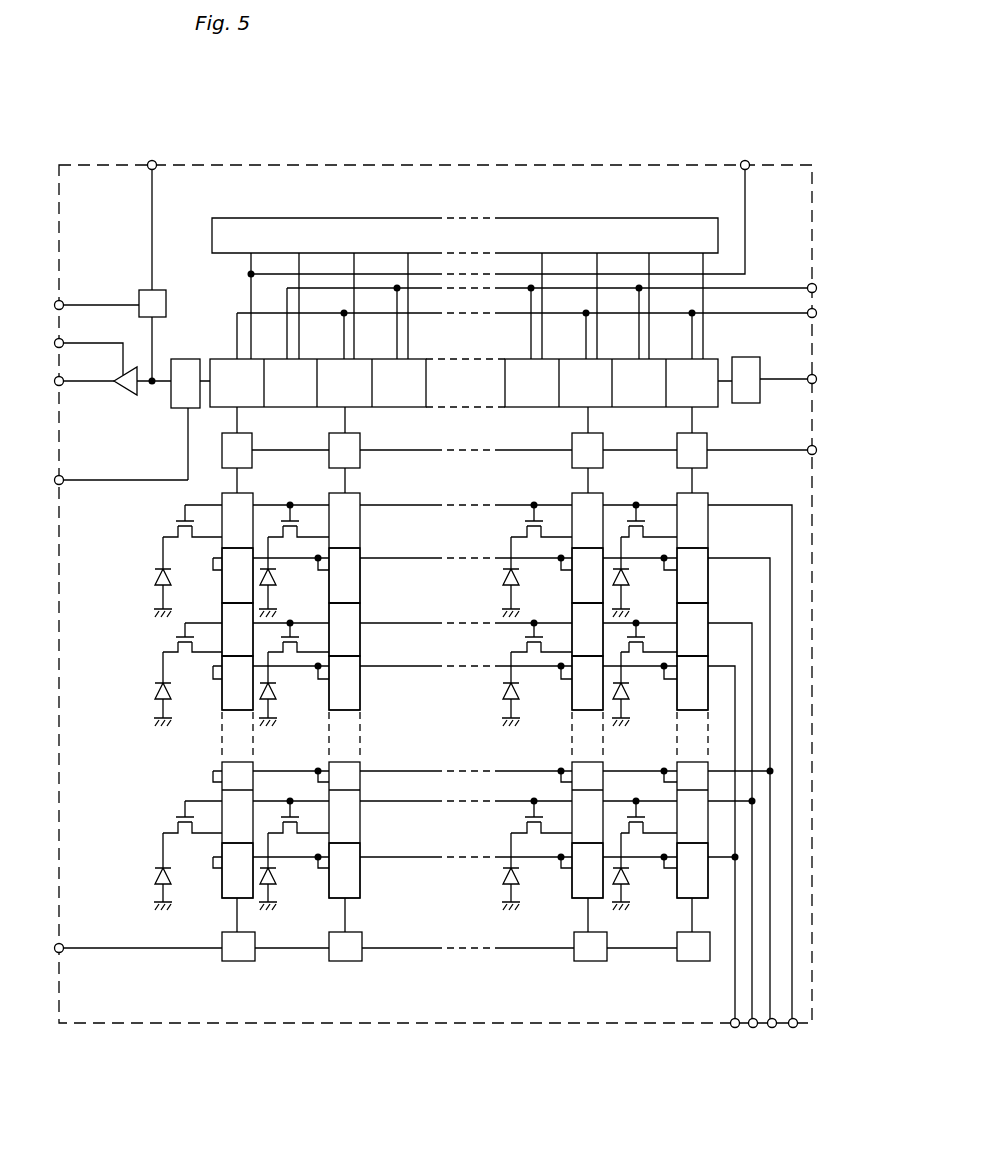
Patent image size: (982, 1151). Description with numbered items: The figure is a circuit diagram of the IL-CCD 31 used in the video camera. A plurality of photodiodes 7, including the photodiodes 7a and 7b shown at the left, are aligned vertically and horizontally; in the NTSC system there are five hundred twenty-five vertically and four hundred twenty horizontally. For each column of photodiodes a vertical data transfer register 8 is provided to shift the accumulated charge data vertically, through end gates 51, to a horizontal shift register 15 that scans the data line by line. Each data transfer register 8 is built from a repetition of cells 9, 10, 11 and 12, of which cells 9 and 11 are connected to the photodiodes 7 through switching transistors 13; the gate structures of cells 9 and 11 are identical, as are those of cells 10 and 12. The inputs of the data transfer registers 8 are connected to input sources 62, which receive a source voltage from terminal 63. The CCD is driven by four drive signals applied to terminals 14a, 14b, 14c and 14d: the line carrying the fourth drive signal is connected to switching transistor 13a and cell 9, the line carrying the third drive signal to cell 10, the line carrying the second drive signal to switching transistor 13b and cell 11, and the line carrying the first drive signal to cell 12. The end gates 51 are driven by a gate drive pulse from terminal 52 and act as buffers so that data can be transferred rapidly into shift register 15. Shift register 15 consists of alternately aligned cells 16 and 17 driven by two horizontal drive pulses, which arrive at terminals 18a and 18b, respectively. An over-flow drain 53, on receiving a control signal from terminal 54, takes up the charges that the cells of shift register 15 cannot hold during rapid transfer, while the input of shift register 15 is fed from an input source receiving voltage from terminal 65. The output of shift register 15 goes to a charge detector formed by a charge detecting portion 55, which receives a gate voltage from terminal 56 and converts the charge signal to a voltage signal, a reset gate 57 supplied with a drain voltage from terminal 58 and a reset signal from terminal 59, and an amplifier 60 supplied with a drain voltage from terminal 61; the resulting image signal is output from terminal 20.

The IL-CCD 31 is at (359, 156).
The photodiode 7 is at (277, 575).
The photodiode 7a is at (155, 577).
The photodiode 7b is at (155, 690).
The data transfer register 8 is at (214, 904).
The cell 9 is at (247, 496).
The cell 10 is at (222, 584).
The cell 11 is at (222, 612).
The cell 12 is at (222, 698).
The switching transistor 13 is at (296, 520).
The switching transistor 13a is at (177, 521).
The switching transistor 13b is at (177, 637).
The terminal 14a is at (733, 1027).
The terminal 14b is at (752, 1028).
The terminal 14c is at (772, 1028).
The terminal 14d is at (794, 1028).
The shift register 15 is at (724, 416).
The cell 16 is at (275, 362).
The cell 17 is at (226, 362).
The terminal 18a is at (811, 284).
The terminal 18b is at (811, 317).
The terminal 20 is at (61, 378).
The end gate 51 is at (248, 440).
The terminal 52 is at (811, 453).
The over-flow drain 53 is at (520, 217).
The terminal 54 is at (746, 161).
The charge detecting portion 55 is at (175, 402).
The terminal 56 is at (63, 484).
The reset gate 57 is at (166, 302).
The terminal 58 is at (154, 161).
The terminal 59 is at (61, 301).
The amplifier 60 is at (133, 397).
The terminal 61 is at (61, 340).
The input source 62 is at (240, 963).
The terminal 63 is at (63, 952).
The terminal 65 is at (811, 382).